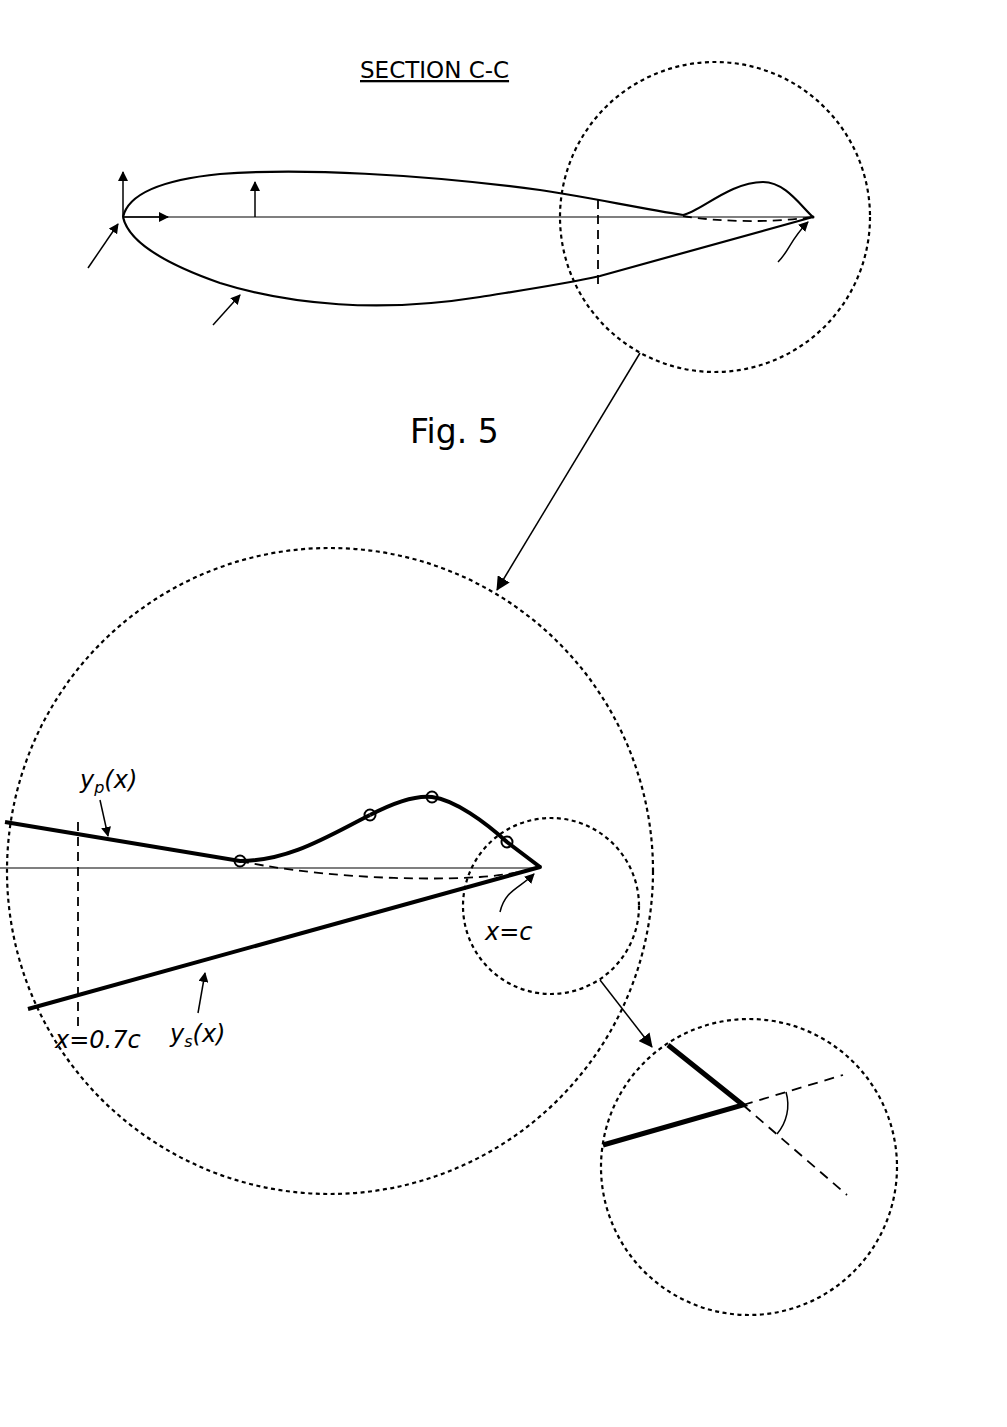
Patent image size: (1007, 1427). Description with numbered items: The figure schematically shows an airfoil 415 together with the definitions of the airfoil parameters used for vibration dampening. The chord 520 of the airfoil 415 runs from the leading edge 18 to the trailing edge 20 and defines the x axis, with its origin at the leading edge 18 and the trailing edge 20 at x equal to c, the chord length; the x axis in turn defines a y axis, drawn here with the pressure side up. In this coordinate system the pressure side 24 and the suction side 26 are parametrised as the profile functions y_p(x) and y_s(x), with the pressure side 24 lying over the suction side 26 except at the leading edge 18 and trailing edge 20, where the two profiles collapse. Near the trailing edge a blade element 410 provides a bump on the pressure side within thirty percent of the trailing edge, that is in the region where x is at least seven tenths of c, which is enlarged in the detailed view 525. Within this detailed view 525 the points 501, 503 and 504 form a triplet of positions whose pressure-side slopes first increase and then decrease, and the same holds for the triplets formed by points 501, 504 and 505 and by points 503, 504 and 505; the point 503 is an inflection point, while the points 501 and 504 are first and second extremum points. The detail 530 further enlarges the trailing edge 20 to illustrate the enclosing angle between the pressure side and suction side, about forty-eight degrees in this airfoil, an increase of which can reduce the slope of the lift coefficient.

The airfoil 415 is at (435, 180).
The leading edge 18 is at (120, 217).
The trailing edge 20 is at (818, 216).
The pressure side 24 is at (456, 175).
The suction side 26 is at (440, 305).
The blade element 410 is at (766, 196).
The chord 520 is at (342, 218).
The detailed view 525 is at (330, 864).
The first extremum point 501 is at (238, 856).
The inflection point 503 is at (367, 810).
The second extremum point 504 is at (432, 791).
The point 505 is at (512, 836).
The detail 530 is at (749, 1148).